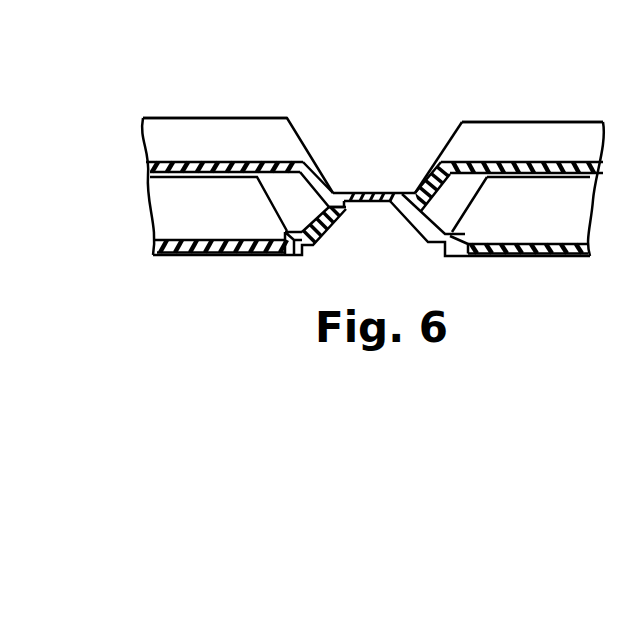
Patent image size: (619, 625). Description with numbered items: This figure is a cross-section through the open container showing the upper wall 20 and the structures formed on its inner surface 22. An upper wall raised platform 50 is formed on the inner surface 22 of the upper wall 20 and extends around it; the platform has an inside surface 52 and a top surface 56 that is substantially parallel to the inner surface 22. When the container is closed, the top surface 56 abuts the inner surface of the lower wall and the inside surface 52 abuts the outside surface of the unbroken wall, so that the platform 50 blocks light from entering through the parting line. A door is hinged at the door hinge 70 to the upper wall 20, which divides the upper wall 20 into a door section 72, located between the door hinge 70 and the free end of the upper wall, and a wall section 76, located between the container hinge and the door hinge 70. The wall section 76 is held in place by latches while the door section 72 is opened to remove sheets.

The upper wall 20 is at (214, 187).
The inner surface of upper wall 22 is at (175, 161).
The inside surface of upper wall raised platform 52 is at (187, 140).
The wall section 76 is at (253, 161).
The door hinge 70 is at (370, 192).
The upper wall raised platform 50 is at (497, 151).
The door section 72 is at (498, 161).
The top surface of upper wall raised platform 56 is at (569, 121).